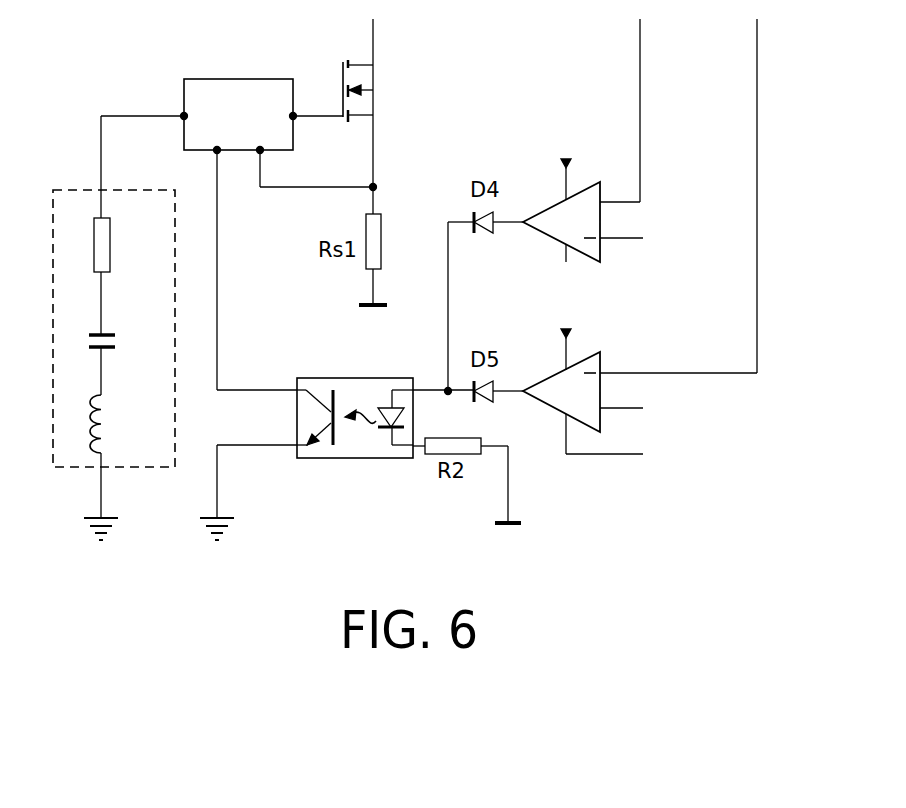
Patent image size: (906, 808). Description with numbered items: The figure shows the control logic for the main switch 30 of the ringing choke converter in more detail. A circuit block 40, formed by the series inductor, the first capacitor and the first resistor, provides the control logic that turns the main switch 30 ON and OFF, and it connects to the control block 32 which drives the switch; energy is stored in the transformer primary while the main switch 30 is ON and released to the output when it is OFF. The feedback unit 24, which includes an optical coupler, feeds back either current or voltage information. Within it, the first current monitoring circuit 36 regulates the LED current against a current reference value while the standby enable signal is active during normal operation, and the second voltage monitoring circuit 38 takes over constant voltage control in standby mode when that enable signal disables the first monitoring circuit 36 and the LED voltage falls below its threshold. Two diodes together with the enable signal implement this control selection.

The feedback unit 24 is at (362, 462).
The main switch 30 is at (368, 78).
The control block 32 is at (277, 309).
The first current monitoring circuit 36 is at (540, 382).
The second voltage monitoring circuit 38 is at (540, 212).
The circuit block 40 is at (74, 189).